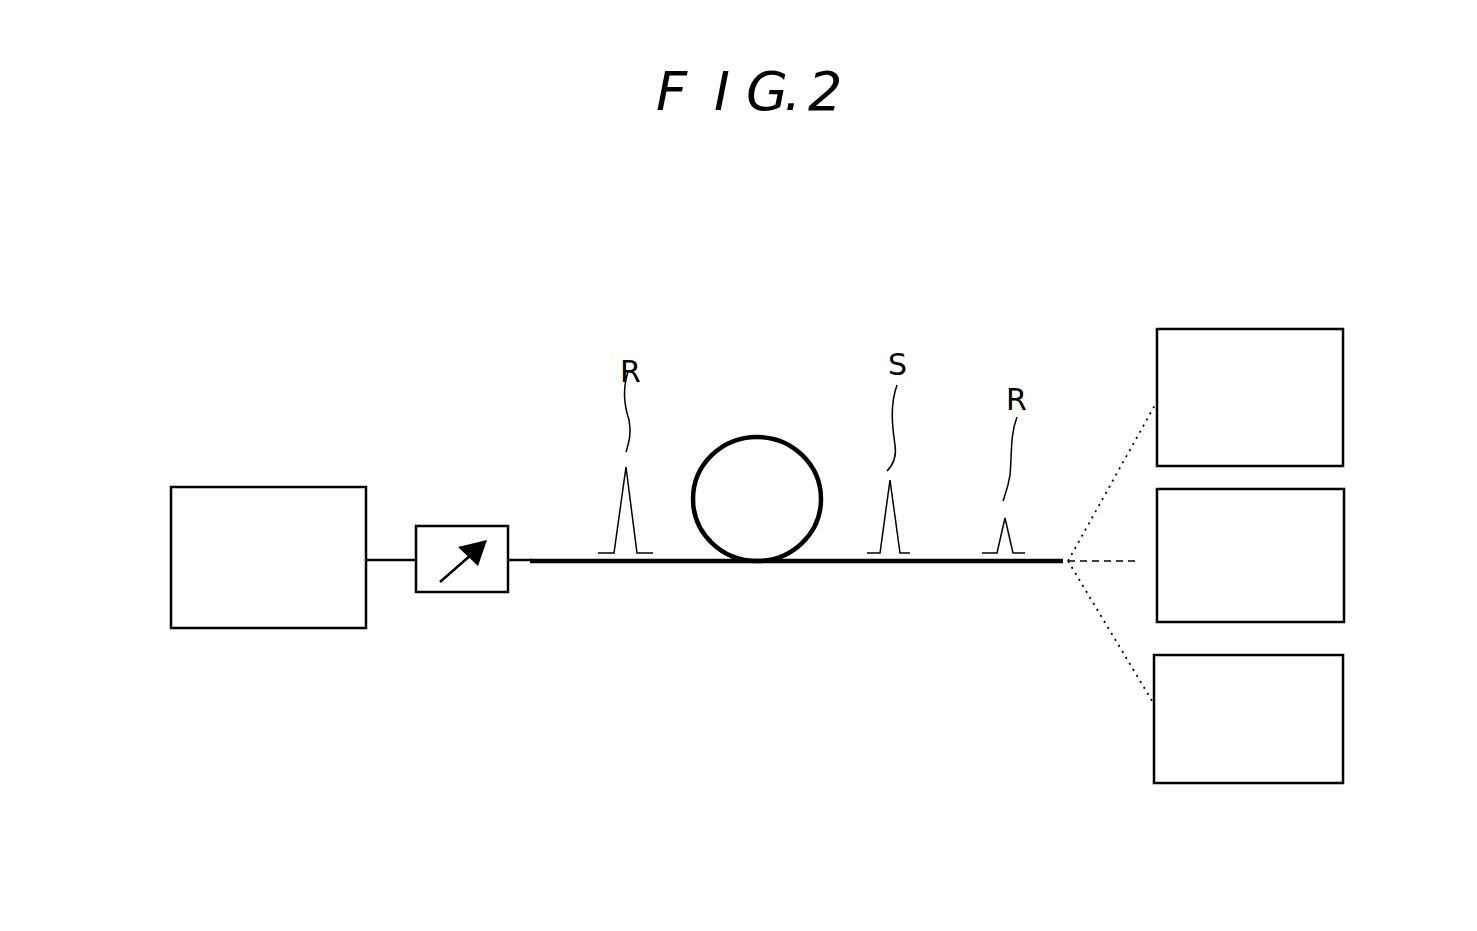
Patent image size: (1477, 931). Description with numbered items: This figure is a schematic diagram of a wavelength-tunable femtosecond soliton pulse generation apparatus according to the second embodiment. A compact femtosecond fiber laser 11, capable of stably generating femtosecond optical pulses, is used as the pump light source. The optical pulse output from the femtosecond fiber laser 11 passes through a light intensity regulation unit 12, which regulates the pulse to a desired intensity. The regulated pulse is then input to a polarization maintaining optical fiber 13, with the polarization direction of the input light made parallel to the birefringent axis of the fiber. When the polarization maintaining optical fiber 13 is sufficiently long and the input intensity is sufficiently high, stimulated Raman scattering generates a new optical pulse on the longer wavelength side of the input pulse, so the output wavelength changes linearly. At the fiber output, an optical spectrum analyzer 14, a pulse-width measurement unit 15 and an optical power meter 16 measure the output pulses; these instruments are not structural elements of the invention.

The femtosecond fiber laser 11 is at (302, 481).
The light intensity regulation unit 12 is at (465, 515).
The polarization maintaining optical fiber 13 is at (943, 569).
The optical spectrum analyzer 14 is at (1343, 367).
The pulse-width measurement unit 15 is at (1344, 533).
The optical power meter 16 is at (1343, 709).